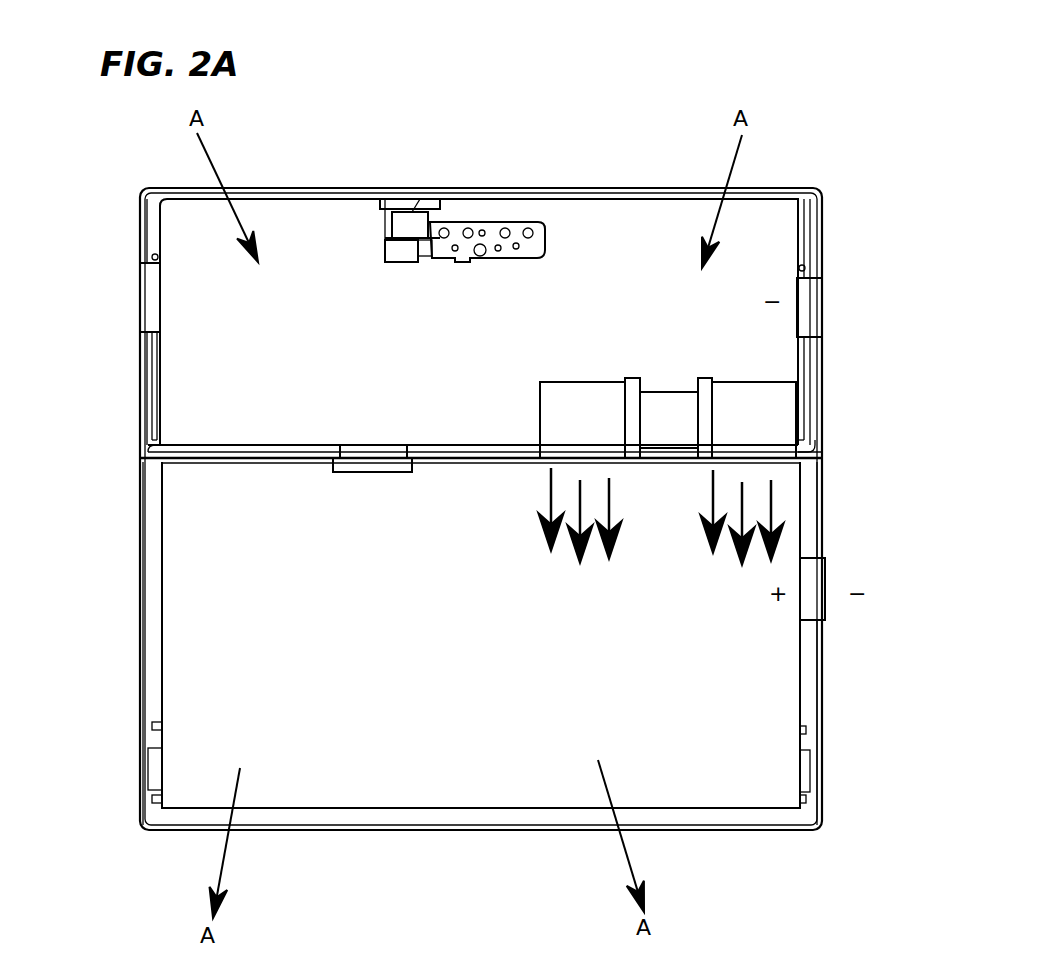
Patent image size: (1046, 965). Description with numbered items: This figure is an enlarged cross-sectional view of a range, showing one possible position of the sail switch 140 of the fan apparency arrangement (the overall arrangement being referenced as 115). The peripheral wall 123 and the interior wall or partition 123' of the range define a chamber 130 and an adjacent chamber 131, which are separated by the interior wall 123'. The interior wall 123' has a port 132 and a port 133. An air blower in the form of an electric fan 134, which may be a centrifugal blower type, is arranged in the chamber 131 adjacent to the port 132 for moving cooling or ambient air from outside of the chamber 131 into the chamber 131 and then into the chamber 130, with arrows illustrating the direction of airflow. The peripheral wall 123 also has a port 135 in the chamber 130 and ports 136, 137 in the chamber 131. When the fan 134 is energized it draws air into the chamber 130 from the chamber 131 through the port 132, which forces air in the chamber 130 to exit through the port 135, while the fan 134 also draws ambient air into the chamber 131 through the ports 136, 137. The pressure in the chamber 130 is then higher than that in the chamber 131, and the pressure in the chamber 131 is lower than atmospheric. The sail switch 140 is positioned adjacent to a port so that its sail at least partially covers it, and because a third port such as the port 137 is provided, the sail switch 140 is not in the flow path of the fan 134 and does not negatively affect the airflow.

The electronic device 115 is at (106, 839).
The peripheral wall 123 is at (472, 518).
The interior wall 123' is at (436, 512).
The chamber 130 is at (327, 768).
The chamber 131 is at (310, 245).
The port 132 is at (765, 463).
The port 133 is at (360, 453).
The electric fan 134 is at (770, 413).
The port 135 is at (815, 607).
The port 136 is at (808, 296).
The port 137 is at (150, 287).
The sail switch 140 is at (394, 470).